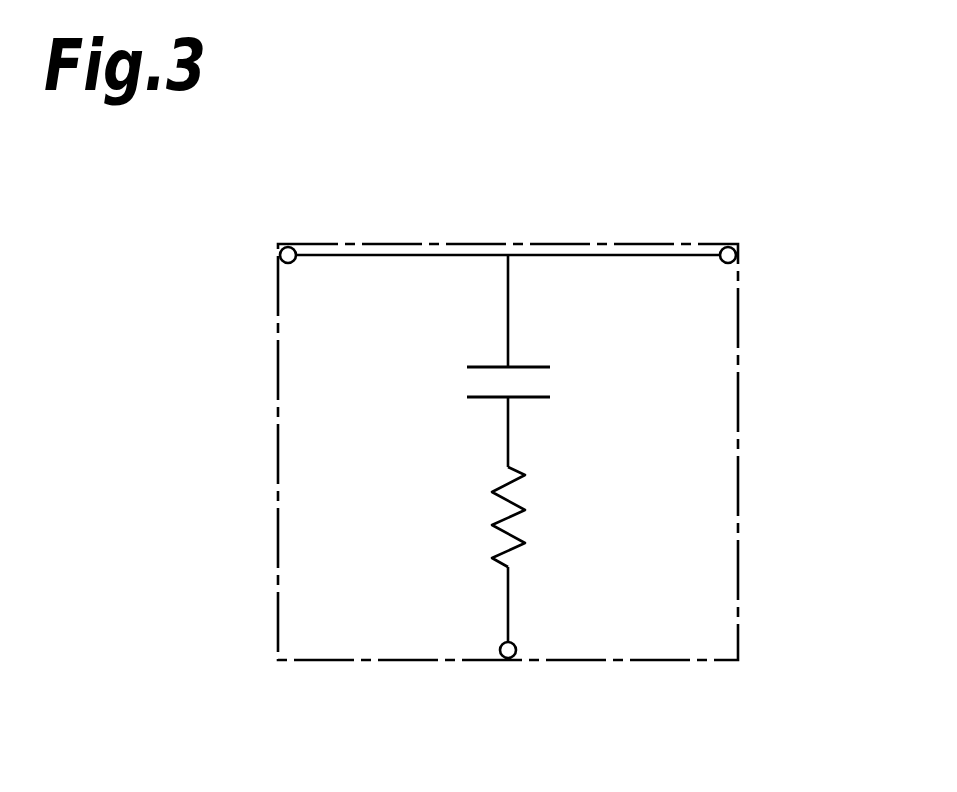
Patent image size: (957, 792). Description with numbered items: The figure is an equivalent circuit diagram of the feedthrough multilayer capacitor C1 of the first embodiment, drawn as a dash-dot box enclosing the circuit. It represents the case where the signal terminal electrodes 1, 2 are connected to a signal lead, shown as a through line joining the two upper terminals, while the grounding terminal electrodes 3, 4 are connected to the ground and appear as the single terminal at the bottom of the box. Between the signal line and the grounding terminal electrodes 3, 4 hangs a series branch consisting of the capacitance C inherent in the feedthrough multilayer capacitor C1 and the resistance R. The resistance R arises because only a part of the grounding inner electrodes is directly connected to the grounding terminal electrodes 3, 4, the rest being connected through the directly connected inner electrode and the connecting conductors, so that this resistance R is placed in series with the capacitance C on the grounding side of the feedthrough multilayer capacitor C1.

The signal terminal electrode 1 is at (287, 229).
The signal terminal electrode 2 is at (727, 229).
The grounding terminal electrode 3 is at (508, 681).
The grounding terminal electrode 4 is at (508, 650).
The capacitance C is at (531, 381).
The resistance R is at (543, 517).
The feedthrough multilayer capacitor C1 is at (738, 522).